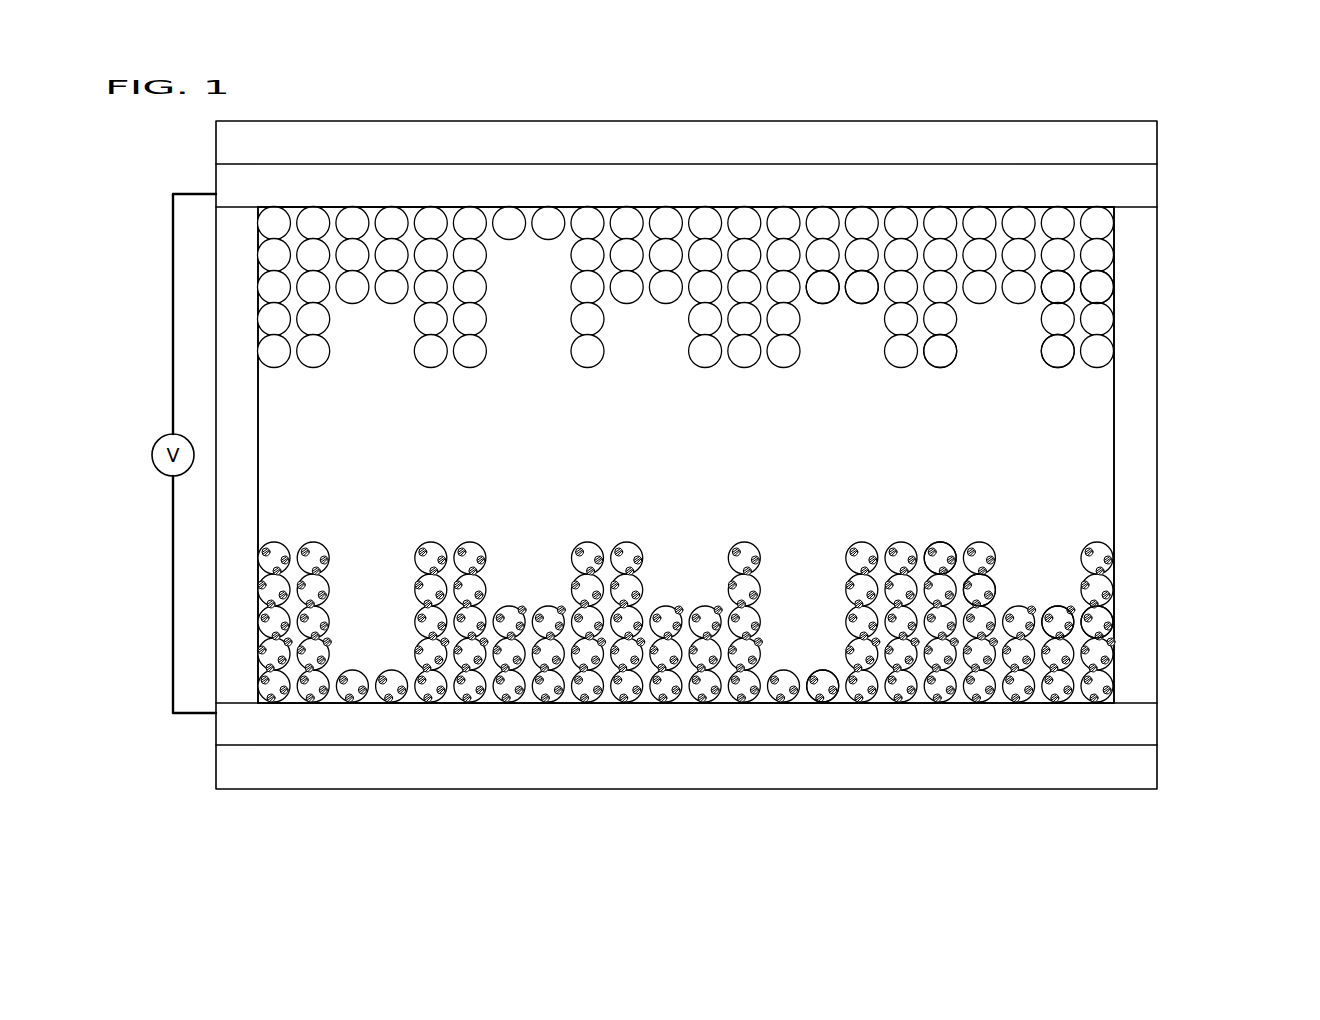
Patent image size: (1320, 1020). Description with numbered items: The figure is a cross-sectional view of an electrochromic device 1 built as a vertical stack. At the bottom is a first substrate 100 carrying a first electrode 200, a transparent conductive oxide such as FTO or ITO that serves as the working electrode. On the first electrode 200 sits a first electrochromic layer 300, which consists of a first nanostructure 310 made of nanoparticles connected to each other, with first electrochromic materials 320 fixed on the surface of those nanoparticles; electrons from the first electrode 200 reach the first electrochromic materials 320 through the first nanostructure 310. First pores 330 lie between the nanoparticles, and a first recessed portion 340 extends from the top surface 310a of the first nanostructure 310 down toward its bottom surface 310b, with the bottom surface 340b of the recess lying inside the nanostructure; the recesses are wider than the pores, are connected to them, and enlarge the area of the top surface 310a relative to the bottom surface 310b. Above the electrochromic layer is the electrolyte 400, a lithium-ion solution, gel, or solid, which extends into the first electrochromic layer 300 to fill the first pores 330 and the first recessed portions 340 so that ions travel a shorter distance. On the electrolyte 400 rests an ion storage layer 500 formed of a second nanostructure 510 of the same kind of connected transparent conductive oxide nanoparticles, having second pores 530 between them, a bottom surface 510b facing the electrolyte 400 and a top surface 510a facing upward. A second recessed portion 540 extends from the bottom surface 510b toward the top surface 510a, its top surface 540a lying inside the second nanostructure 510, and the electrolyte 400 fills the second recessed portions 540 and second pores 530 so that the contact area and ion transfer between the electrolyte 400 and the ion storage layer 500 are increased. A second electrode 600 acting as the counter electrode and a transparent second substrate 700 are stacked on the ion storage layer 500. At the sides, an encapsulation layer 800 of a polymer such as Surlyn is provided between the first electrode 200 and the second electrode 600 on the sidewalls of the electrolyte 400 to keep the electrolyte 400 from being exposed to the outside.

The electrochromic device 1 is at (1180, 84).
The first substrate 100 is at (225, 767).
The first electrode 200 is at (225, 729).
The first electrochromic layer 300 is at (777, 668).
The first nanostructure 310 is at (1100, 558).
The top surface of the first nanostructure 310a is at (942, 543).
The bottom surface of the first nanostructure 310b is at (1097, 703).
The first electrochromic materials 320 is at (1096, 597).
The first pores 330 is at (1083, 637).
The first recessed portion 340 is at (998, 586).
The bottom surface of the first recessed portion 340b is at (796, 672).
The electrolyte 400 is at (1100, 472).
The ion storage layer 500 is at (777, 234).
The second nanostructure 510 is at (1102, 257).
The top surface of the second nanostructure 510a is at (1097, 207).
The bottom surface of the second nanostructure 510b is at (1058, 367).
The second pores 530 is at (1077, 302).
The second recessed portion 540 is at (968, 349).
The top surface of the second recessed portion 540a is at (842, 313).
The second electrode 600 is at (225, 178).
The second substrate 700 is at (225, 143).
The encapsulation layer 800 is at (1147, 432).